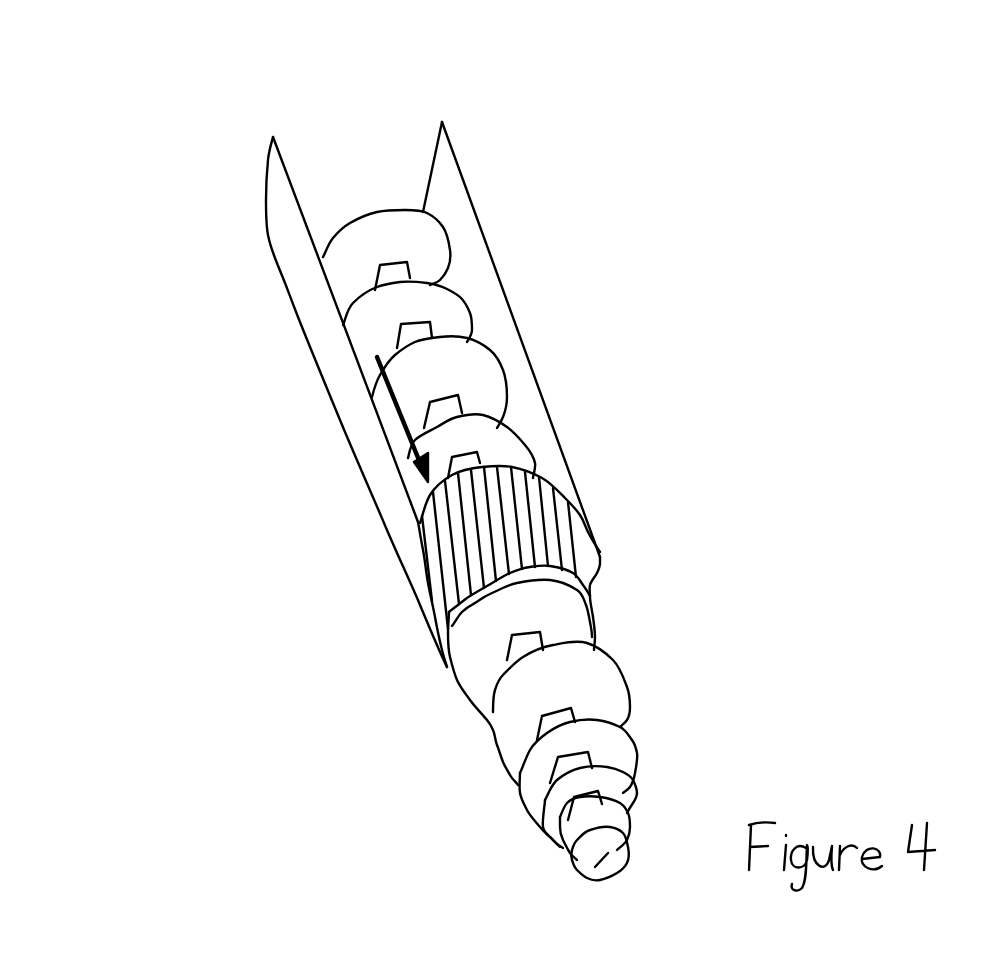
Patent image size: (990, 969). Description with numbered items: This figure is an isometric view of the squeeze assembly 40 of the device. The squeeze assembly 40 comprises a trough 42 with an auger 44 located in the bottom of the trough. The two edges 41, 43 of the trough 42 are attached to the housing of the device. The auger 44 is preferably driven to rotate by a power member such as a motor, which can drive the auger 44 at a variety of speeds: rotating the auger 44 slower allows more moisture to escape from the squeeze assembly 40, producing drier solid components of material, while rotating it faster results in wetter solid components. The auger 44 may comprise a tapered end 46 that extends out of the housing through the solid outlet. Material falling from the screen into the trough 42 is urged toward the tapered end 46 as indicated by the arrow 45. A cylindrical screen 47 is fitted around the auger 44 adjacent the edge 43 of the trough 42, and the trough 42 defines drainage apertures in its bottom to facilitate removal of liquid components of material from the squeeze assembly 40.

The squeeze assembly 40 is at (419, 461).
The edge 41 is at (316, 402).
The trough 42 is at (511, 339).
The edge 43 is at (576, 668).
The auger 44 is at (429, 258).
The arrow 45 is at (355, 450).
The tapered end 46 is at (524, 758).
The cylindrical screen 47 is at (559, 535).